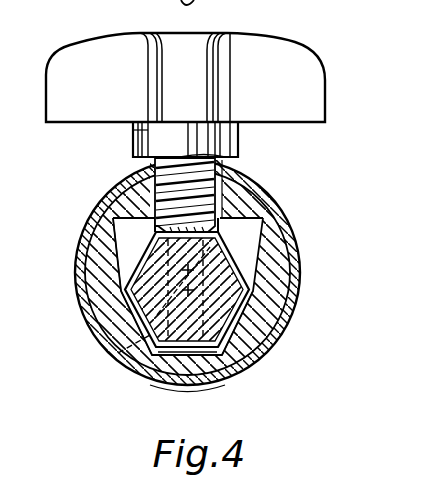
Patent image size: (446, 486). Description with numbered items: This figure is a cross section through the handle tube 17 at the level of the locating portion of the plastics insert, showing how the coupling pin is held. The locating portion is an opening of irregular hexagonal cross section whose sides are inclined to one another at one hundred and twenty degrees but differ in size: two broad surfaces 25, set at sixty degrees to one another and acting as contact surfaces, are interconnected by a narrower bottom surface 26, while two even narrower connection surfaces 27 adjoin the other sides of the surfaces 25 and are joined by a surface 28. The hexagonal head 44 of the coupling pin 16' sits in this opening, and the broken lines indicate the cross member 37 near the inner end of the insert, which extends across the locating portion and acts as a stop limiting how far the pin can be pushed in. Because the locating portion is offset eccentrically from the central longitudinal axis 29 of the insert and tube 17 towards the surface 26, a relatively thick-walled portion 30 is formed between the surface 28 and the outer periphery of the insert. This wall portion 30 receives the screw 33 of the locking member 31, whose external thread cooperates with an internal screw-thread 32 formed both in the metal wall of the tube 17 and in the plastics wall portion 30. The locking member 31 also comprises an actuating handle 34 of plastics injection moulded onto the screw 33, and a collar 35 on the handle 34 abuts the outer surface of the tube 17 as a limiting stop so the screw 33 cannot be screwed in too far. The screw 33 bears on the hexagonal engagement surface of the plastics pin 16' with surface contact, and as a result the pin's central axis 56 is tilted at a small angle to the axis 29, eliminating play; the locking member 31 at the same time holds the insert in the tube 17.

The plastics coupling pin 16' is at (216, 267).
The tube 17 is at (295, 293).
The broad surfaces 25 is at (100, 312).
The narrower surface 26 is at (170, 383).
The connection surfaces 27 is at (105, 232).
The surface 28 is at (242, 195).
The central longitudinal axis 29 is at (150, 281).
The thick-walled portion 30 is at (127, 190).
The locking member 31 is at (285, 67).
The internal screw-thread 32 is at (170, 157).
The screw 33 is at (192, 156).
The actuating handle 34 is at (198, 78).
The collar 35 is at (153, 133).
The cross member 37 is at (118, 353).
The hexagonal head 44 is at (125, 257).
The central axis 56 is at (248, 300).